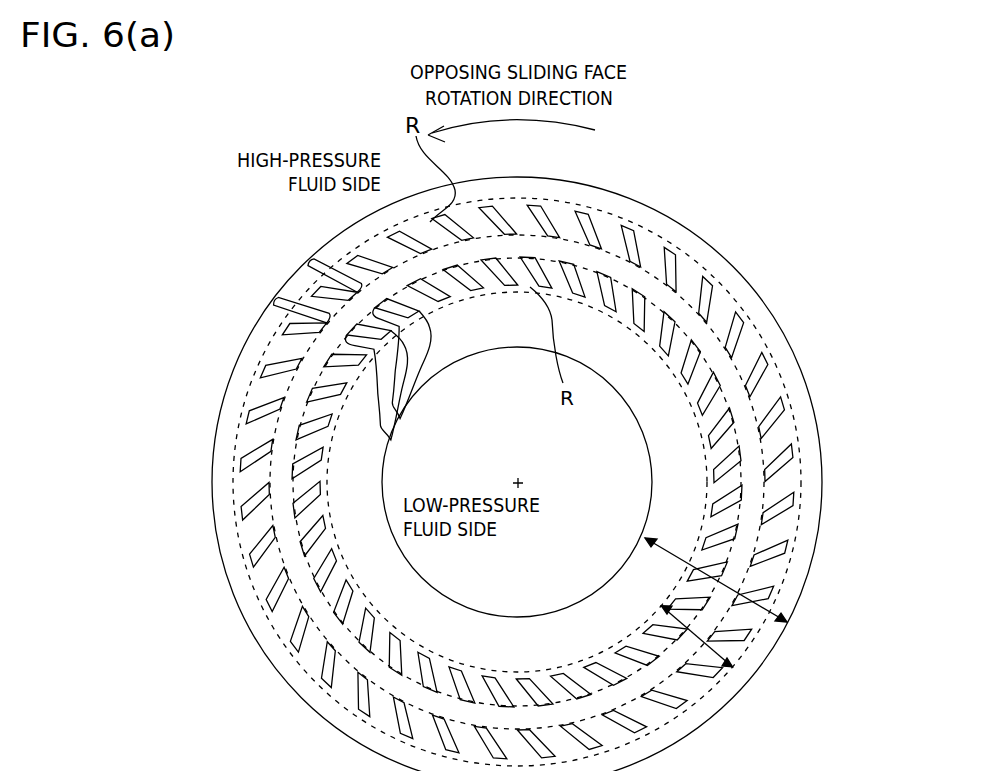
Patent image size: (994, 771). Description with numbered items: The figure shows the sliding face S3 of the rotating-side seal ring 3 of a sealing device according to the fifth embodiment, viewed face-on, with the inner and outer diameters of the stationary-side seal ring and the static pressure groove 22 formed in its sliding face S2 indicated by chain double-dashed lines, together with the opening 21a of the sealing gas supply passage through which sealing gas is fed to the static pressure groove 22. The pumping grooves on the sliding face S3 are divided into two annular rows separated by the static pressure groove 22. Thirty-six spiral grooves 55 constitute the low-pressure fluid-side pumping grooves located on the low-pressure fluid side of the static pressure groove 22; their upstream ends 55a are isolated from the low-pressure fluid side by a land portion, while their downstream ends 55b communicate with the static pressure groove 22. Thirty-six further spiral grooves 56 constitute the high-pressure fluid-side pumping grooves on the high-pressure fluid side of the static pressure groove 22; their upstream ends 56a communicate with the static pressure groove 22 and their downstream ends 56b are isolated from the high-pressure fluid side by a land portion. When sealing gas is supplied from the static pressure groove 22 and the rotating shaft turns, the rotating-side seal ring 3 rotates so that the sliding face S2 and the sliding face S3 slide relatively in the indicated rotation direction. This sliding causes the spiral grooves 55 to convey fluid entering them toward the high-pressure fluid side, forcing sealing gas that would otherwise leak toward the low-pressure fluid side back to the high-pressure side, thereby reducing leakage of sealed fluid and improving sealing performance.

The rotating-side seal ring 3 is at (616, 188).
The opening of the sealing gas supply passage 21a is at (508, 246).
The static pressure groove 22 is at (700, 252).
The spiral grooves 55 is at (431, 386).
The upstream ends 55a is at (392, 424).
The downstream ends 55b is at (391, 447).
The spiral grooves 56 is at (264, 307).
The upstream ends 56a is at (342, 278).
The downstream ends 56b is at (309, 296).
The sliding face of the stationary-side seal ring S2 is at (738, 652).
The sliding face of the rotating-side seal ring S3 is at (740, 598).